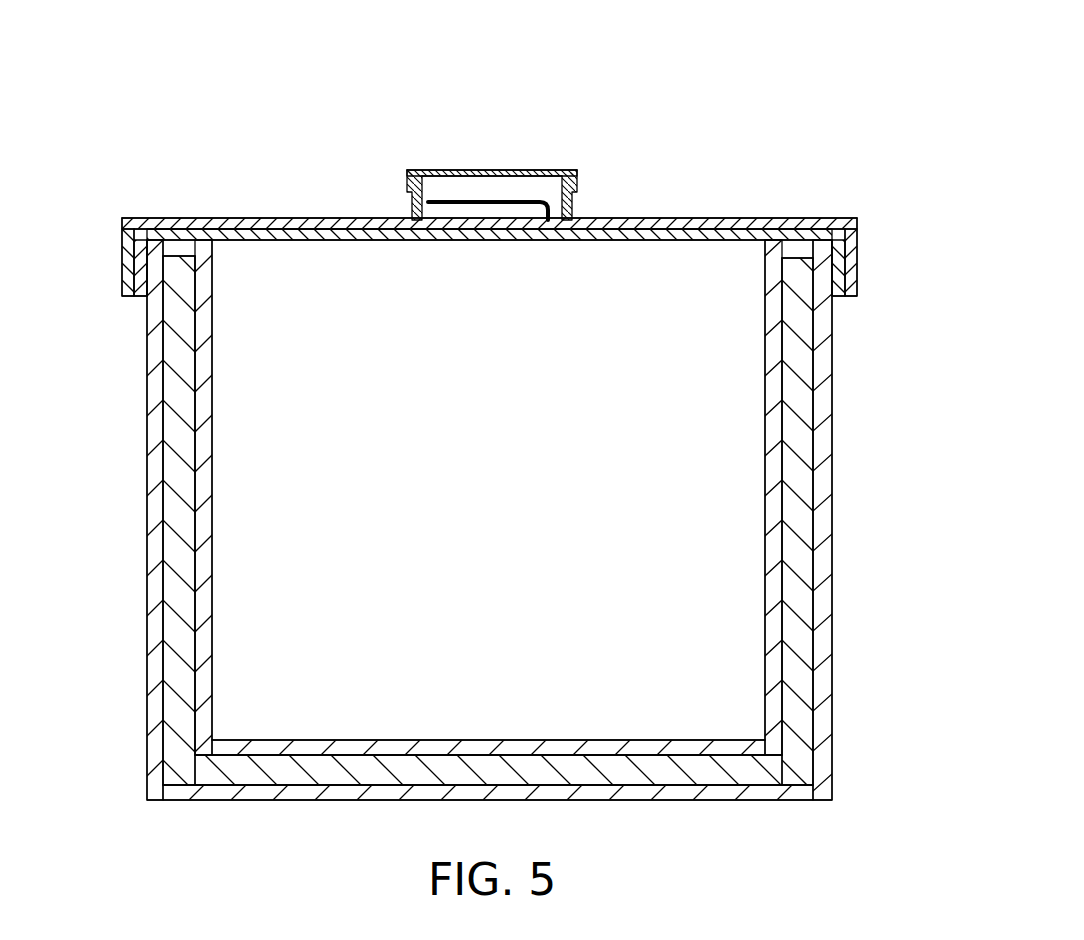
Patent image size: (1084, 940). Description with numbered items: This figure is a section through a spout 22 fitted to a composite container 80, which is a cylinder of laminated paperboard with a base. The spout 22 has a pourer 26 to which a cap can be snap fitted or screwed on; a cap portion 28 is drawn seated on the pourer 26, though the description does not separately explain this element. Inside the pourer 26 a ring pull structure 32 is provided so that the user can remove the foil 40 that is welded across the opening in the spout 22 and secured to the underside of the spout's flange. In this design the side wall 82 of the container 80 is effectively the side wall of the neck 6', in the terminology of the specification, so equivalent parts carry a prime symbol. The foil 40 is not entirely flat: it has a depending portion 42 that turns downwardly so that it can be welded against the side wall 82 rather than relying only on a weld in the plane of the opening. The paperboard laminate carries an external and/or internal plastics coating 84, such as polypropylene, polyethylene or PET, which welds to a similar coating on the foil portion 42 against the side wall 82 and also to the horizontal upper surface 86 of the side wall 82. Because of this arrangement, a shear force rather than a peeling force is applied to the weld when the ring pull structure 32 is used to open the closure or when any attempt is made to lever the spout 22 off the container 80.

The neck portion 6' is at (489, 199).
The spout 22 is at (466, 254).
The pourer 26 is at (571, 207).
The cap 28 is at (537, 167).
The ring pull structure 32 is at (486, 200).
The foil 40 is at (593, 241).
The depending portion of the foil 42 is at (142, 296).
The composite container 80 is at (522, 483).
The side wall 82 is at (838, 483).
The coating 84 is at (160, 470).
The horizontal upper surface 86 is at (790, 257).